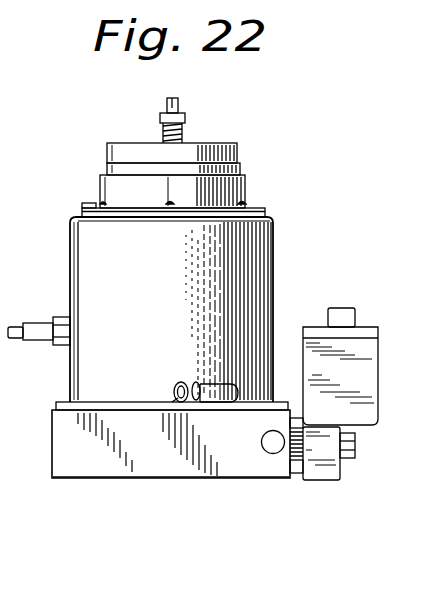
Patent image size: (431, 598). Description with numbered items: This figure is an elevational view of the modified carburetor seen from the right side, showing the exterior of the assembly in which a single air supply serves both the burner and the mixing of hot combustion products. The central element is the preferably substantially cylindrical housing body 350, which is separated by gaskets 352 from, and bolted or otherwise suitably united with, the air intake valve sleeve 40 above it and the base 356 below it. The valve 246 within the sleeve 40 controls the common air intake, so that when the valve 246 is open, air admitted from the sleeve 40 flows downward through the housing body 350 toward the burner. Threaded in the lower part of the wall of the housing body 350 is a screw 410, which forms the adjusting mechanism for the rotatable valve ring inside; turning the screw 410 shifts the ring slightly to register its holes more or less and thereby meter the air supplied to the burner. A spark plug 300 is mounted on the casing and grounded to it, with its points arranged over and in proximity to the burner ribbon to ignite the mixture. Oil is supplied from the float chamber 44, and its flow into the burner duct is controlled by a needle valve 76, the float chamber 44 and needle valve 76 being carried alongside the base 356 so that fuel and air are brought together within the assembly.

The air intake valve sleeve 40 is at (247, 189).
The float chamber 44 is at (376, 326).
The needle valve 76 is at (268, 454).
The valve 246 is at (163, 120).
The spark plug 300 is at (34, 321).
The housing body 350 is at (274, 257).
The gaskets 352 is at (266, 213).
The base 356 is at (147, 480).
The screw 410 is at (173, 384).